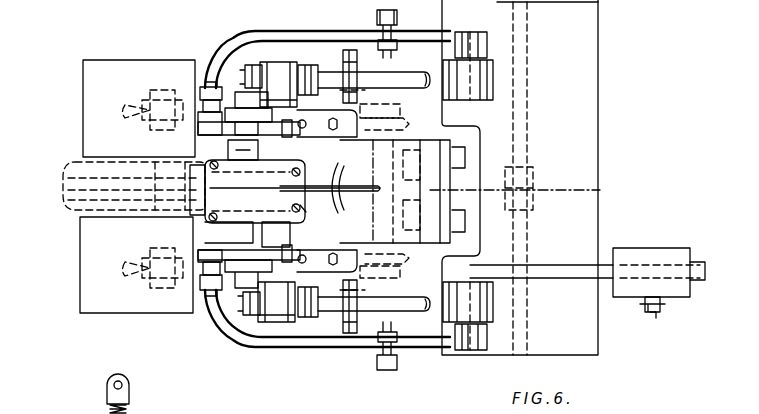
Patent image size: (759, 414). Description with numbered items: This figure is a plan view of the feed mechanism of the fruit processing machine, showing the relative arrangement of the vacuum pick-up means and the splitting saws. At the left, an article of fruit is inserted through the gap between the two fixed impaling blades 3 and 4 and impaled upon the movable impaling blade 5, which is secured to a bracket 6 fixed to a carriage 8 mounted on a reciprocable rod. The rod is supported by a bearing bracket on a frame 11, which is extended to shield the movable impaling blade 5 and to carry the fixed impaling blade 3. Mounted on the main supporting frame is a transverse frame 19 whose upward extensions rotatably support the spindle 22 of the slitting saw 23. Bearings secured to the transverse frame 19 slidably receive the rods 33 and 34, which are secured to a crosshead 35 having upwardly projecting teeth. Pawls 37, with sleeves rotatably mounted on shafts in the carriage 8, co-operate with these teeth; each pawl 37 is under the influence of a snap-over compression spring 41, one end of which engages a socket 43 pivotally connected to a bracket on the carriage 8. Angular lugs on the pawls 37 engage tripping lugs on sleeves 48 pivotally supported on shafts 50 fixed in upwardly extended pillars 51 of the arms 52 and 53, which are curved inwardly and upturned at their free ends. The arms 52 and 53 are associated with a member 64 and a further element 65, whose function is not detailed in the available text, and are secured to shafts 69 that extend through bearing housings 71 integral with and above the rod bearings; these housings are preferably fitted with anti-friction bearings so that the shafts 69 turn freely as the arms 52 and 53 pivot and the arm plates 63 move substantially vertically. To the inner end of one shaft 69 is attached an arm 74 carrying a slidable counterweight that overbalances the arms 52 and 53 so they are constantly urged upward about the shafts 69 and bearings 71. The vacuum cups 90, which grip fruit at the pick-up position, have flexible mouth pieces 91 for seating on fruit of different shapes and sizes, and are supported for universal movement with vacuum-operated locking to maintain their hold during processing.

The fixed impaling blade 3 is at (236, 190).
The fixed impaling blade 4 is at (329, 182).
The movable impaling blade 5 is at (280, 192).
The bracket 6 is at (62, 198).
The carriage 8 is at (309, 214).
The frame 11 is at (68, 172).
The transverse frame 19 is at (590, 127).
The spindle 22 is at (522, 117).
The slitting saw 23 is at (600, 190).
The rod 33 is at (406, 312).
The rod 34 is at (408, 74).
The crosshead 35 is at (278, 62).
The pawl 37 is at (298, 130).
The over centering compression spring 41 is at (128, 409).
The socket 43 is at (107, 396).
The sleeve 48 is at (200, 126).
The shaft 50 is at (222, 84).
The pillar 51 is at (198, 95).
The arm 52 is at (327, 50).
The arm 53 is at (327, 329).
The arm plate 63 is at (83, 104).
The member 64 is at (380, 40).
The nut 65 is at (398, 42).
The shaft 69 is at (470, 32).
The bearing housing 71 is at (488, 96).
The arm 74 is at (560, 260).
The vacuum cup 90 is at (400, 110).
The flexible mouth piece 91 is at (405, 125).